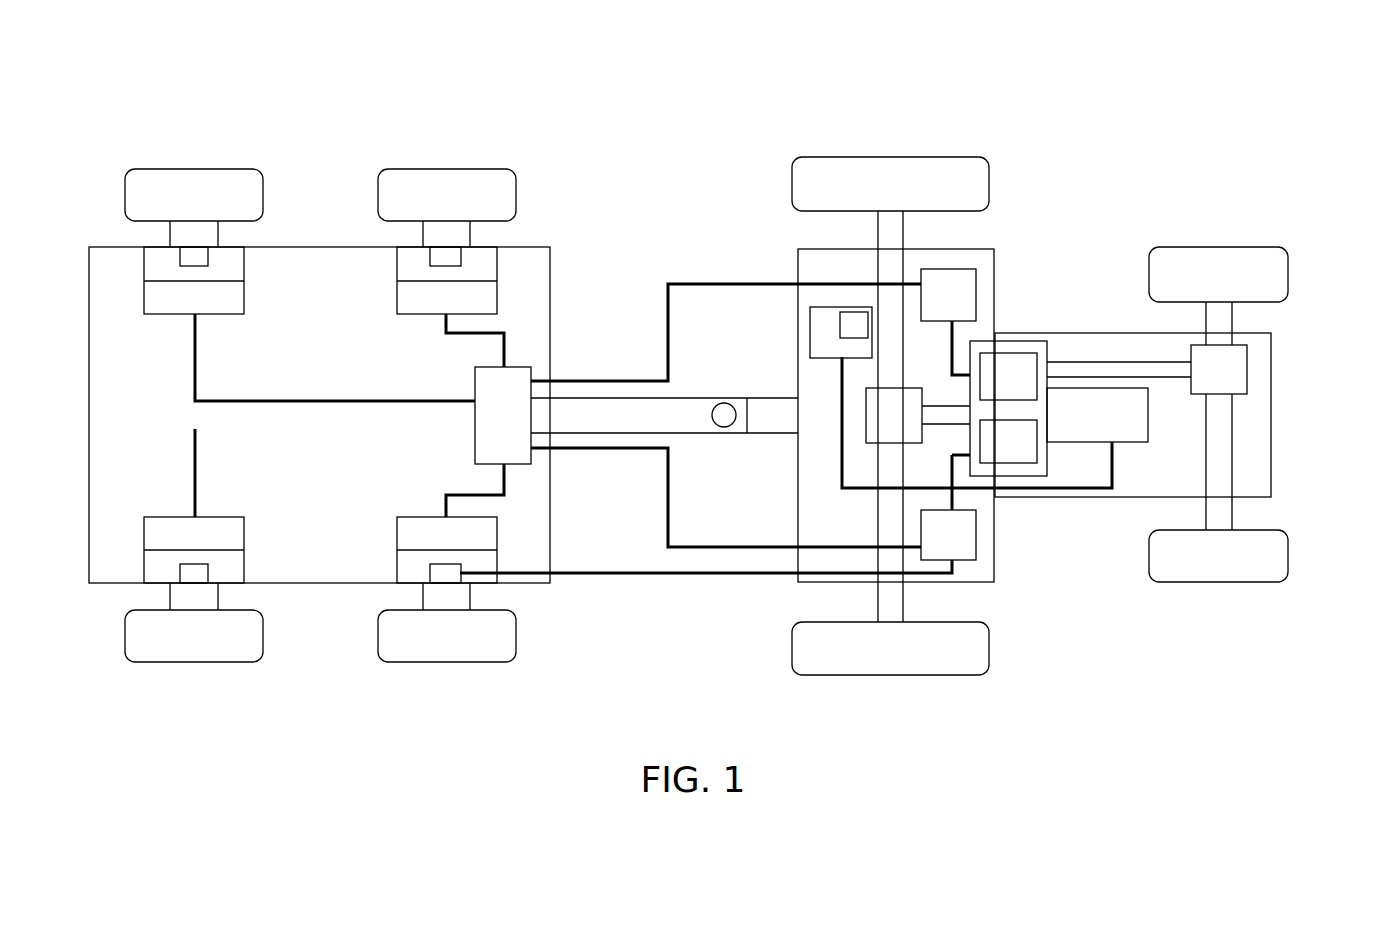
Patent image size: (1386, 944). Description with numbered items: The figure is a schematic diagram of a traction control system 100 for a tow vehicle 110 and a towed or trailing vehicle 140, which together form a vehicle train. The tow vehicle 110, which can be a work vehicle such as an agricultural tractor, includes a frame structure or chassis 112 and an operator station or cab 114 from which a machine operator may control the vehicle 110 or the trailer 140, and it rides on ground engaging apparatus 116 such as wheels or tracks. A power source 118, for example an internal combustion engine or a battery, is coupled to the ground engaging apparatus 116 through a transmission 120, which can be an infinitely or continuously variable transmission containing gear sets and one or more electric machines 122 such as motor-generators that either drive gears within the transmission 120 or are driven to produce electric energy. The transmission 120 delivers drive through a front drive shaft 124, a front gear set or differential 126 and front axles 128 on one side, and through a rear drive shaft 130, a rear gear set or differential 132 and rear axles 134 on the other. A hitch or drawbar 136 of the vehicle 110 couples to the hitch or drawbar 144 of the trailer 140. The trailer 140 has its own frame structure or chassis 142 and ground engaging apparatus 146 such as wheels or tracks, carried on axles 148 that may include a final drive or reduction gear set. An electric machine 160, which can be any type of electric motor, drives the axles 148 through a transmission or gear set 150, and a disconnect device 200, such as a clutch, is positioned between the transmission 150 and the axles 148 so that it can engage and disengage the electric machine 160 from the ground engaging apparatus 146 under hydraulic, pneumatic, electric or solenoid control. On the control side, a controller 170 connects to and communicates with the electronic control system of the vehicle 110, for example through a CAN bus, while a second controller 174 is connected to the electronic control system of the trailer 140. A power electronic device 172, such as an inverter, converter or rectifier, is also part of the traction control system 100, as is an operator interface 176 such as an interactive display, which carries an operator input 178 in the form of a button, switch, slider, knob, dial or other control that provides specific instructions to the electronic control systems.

The traction control system 100 is at (628, 68).
The tow vehicle 110 is at (1085, 120).
The frame structure or chassis 112 is at (1245, 474).
The operator station or cab 114 is at (968, 570).
The ground engaging apparatus 116 is at (877, 650).
The power source 118 is at (1120, 426).
The transmission 120 is at (1027, 346).
The electric machine 122 is at (1030, 392).
The front drive shaft 124 is at (1098, 370).
The front gear set or differential 126 is at (1198, 382).
The front axle 128 is at (1222, 443).
The rear drive shaft 130 is at (942, 415).
The rear gear set or differential 132 is at (915, 425).
The rear axle 134 is at (893, 522).
The hitch or drawbar 136 is at (770, 415).
The towed or trailing vehicle 140 is at (312, 120).
The frame structure or chassis 142 is at (310, 533).
The hitch or drawbar 144 is at (650, 413).
The ground engaging apparatus 146 is at (191, 634).
The axle 148 is at (190, 238).
The transmission or gear set 150 is at (403, 256).
The electric machine 160 is at (450, 297).
The controller 170 is at (970, 549).
The power electronic device 172 is at (970, 309).
The second controller 174 is at (481, 426).
The operator interface 176 is at (833, 347).
The operator input 178 is at (860, 326).
The disconnect device 200 is at (194, 262).